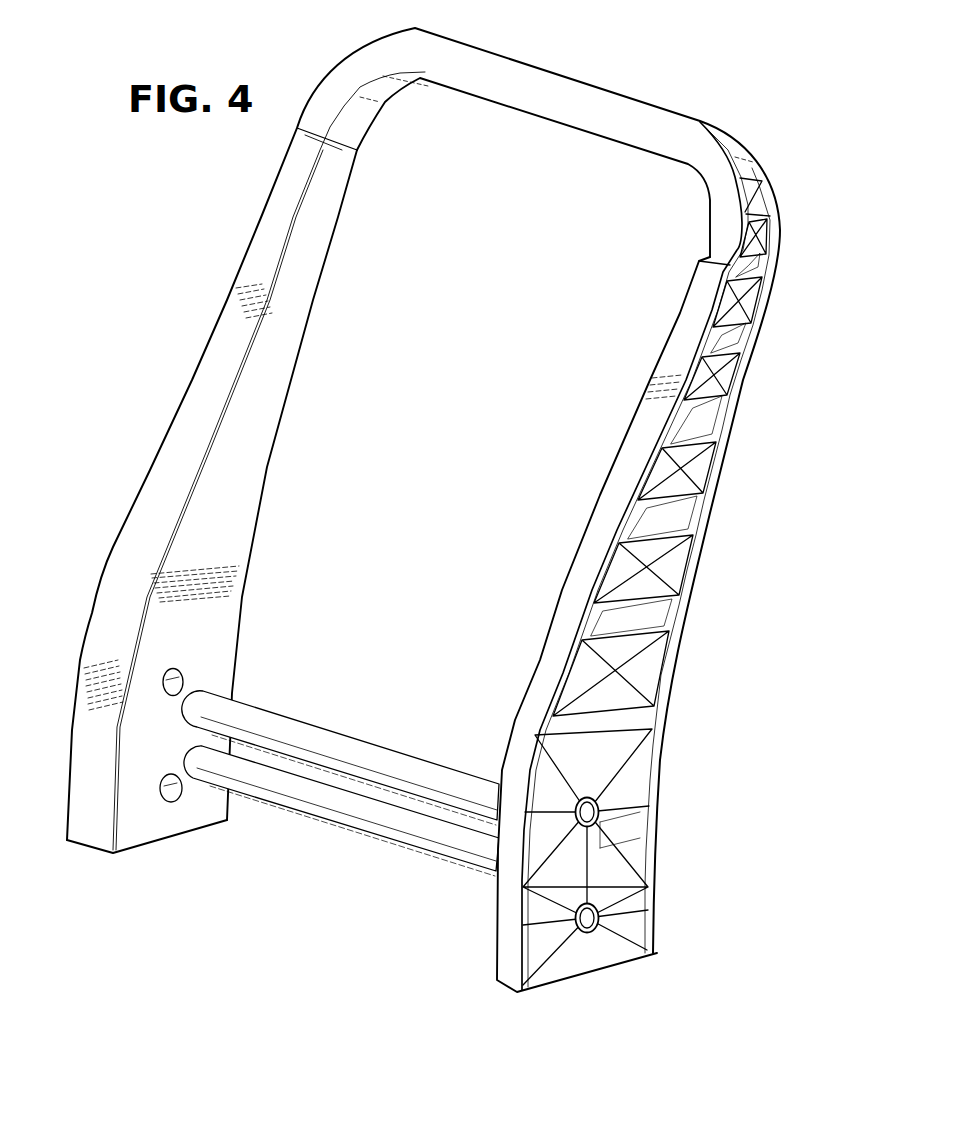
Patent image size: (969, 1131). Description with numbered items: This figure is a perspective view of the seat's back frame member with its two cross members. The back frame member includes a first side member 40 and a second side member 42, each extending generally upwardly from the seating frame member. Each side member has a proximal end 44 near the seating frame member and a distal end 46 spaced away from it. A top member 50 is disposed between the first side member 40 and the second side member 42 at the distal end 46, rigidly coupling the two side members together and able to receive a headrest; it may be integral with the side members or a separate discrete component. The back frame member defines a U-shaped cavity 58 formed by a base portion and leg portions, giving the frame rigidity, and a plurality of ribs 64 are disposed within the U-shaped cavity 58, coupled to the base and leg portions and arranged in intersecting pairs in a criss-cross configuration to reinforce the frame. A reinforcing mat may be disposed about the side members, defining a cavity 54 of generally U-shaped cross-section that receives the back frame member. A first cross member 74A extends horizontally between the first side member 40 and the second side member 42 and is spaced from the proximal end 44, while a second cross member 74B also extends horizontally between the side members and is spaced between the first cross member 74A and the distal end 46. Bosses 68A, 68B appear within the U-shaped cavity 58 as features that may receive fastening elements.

The first side member 40 is at (776, 325).
The second side member 42 is at (228, 240).
The proximal end 44 is at (678, 939).
The distal end 46 is at (792, 200).
The top member 50 is at (545, 80).
The cavity 54 is at (317, 220).
The U-shaped cavity 58 is at (650, 567).
The ribs 64 is at (697, 445).
The aperture 68A is at (585, 906).
The aperture 68B is at (591, 935).
The first cross member 74A is at (352, 814).
The second cross member 74B is at (323, 740).